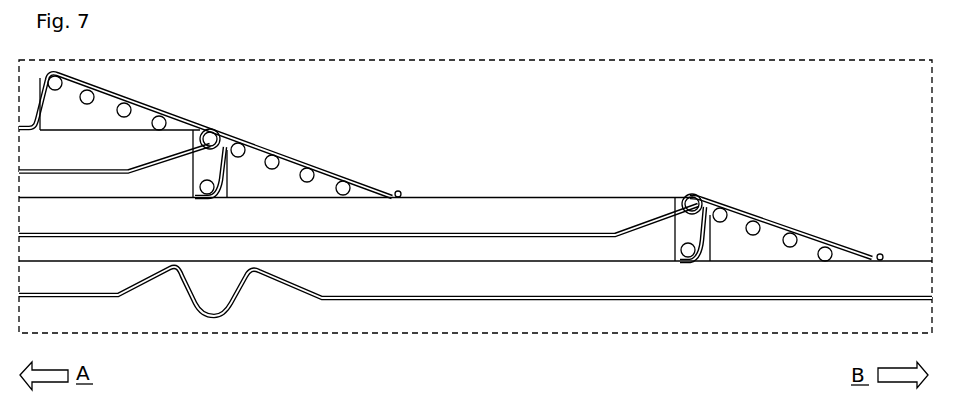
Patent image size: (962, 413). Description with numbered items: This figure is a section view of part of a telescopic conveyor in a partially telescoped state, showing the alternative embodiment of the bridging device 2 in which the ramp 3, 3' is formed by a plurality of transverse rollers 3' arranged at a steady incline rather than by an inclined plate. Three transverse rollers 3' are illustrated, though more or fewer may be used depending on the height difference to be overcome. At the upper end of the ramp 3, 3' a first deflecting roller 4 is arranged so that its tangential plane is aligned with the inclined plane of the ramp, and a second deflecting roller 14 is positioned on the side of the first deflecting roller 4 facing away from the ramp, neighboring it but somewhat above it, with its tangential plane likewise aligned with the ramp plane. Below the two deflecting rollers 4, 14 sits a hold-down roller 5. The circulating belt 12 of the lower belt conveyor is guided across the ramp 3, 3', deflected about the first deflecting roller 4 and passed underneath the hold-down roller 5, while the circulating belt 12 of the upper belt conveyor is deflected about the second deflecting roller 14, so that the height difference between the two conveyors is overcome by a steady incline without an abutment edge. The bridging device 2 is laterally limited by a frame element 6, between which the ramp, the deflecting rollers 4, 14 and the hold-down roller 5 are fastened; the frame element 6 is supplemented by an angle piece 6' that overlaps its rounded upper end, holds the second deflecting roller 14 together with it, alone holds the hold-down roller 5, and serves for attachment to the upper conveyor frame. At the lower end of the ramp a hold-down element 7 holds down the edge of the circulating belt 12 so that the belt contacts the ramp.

The bridging device 2 is at (149, 102).
The ramp 3 is at (748, 200).
The transverse rollers 3' is at (325, 145).
The first deflecting roller 4 is at (273, 154).
The hold-down roller 5 is at (208, 192).
The frame element 6 is at (452, 204).
The angle piece 6' is at (358, 191).
The hold-down element 7 is at (400, 190).
The circulating belt 12 is at (513, 197).
The second deflecting roller 14 is at (215, 132).